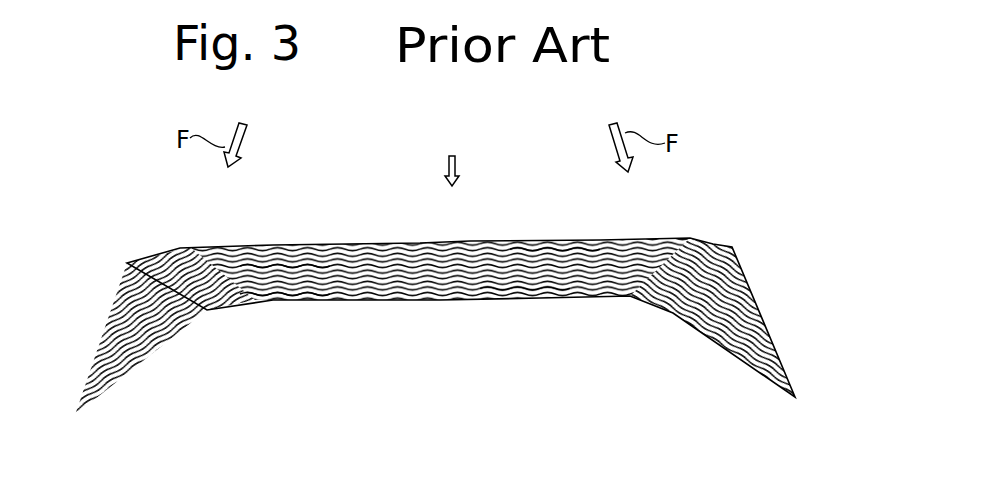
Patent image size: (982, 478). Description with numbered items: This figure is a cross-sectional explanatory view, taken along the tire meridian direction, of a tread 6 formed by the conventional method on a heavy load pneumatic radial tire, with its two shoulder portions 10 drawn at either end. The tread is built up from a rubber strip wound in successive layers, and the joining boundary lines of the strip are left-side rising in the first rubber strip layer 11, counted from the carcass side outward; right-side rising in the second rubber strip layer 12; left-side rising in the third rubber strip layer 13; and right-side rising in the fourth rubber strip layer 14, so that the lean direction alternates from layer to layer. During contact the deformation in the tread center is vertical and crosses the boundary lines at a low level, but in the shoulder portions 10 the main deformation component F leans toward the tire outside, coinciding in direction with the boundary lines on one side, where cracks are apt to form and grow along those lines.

The braided wire band (prior art) 6 is at (414, 242).
The flattened end portions of braided band 10 is at (127, 263).
The rubber strip layer 11 is at (277, 300).
The rubber strip layer 12 is at (527, 285).
The rubber strip layer 13 is at (268, 267).
The rubber strip layer 14 is at (553, 242).